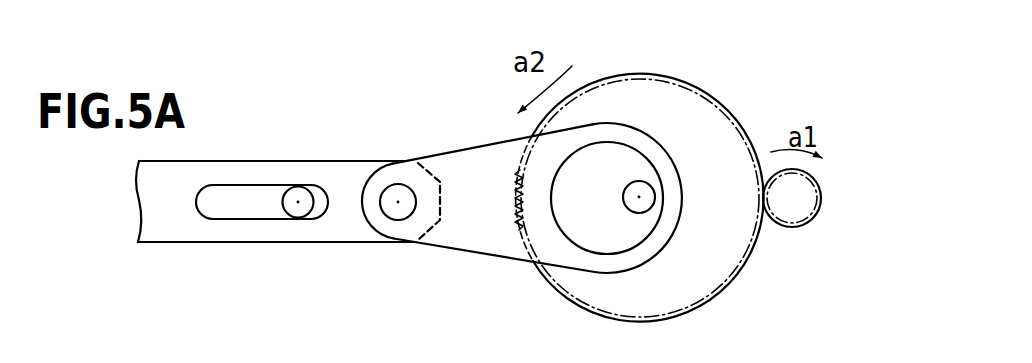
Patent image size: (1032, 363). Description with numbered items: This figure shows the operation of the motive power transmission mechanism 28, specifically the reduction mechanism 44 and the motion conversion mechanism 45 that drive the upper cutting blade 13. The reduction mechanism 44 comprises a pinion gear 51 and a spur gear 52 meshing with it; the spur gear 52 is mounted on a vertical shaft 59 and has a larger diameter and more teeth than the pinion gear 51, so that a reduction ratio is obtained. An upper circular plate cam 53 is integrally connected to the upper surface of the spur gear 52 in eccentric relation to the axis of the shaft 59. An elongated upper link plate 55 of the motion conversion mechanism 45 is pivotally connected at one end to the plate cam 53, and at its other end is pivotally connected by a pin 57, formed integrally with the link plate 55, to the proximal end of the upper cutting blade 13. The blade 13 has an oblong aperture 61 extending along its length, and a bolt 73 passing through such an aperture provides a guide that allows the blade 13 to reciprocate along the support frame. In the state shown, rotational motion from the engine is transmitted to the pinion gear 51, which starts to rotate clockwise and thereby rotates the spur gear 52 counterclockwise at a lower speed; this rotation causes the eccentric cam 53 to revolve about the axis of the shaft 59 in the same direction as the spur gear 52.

The motive power transmission mechanism 28 is at (202, 62).
The upper cutting blade 13 is at (203, 161).
The oblong aperture 61 is at (249, 193).
The bolt 73 is at (298, 188).
The motion conversion mechanism 45 is at (485, 103).
The upper link plate 55 is at (463, 248).
The pin 57 is at (391, 192).
The upper circular plate cam 53 is at (613, 153).
The vertical shaft 59 is at (642, 190).
The spur gear 52 is at (752, 128).
The pinion gear 51 is at (819, 181).
The reduction mechanism 44 is at (783, 243).